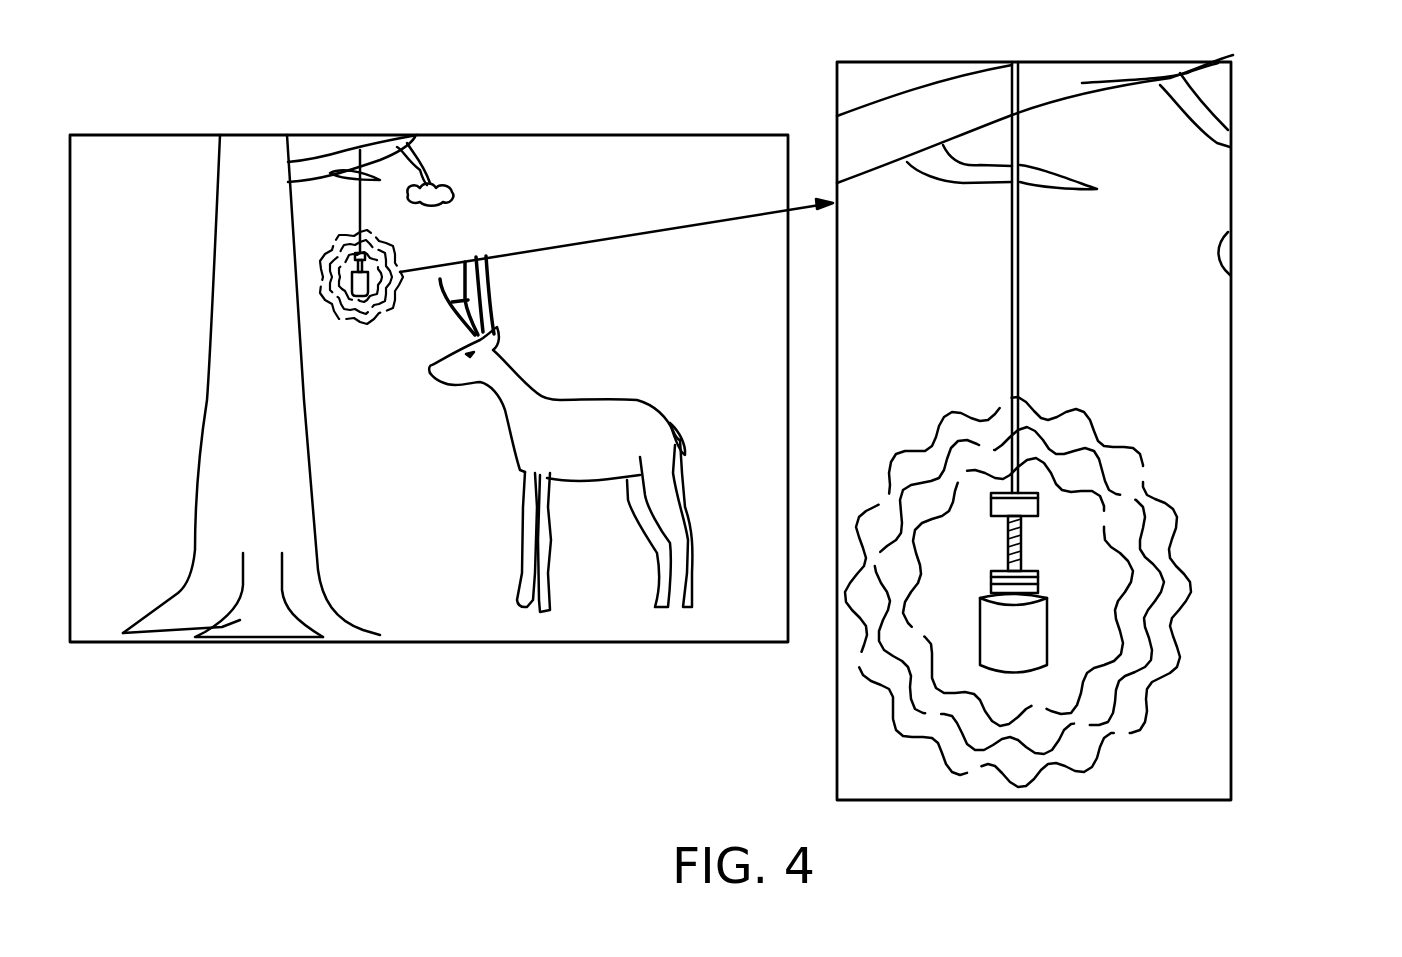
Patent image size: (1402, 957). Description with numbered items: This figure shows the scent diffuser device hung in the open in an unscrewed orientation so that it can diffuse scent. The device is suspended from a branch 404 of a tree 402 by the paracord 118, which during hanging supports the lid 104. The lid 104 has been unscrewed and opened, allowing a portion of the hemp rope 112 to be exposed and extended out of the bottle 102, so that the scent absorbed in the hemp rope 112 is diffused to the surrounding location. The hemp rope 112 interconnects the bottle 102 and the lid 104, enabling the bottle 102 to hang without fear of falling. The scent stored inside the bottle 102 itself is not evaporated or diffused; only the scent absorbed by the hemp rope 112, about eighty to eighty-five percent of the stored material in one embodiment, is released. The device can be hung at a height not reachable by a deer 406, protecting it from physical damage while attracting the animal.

The tree 402 is at (260, 500).
The deer 406 is at (587, 440).
The branch 404 is at (1233, 55).
The paracord 118 is at (1018, 339).
The lid 104 is at (1038, 502).
The hemp rope 112 is at (1021, 549).
The bottle 102 is at (1022, 640).